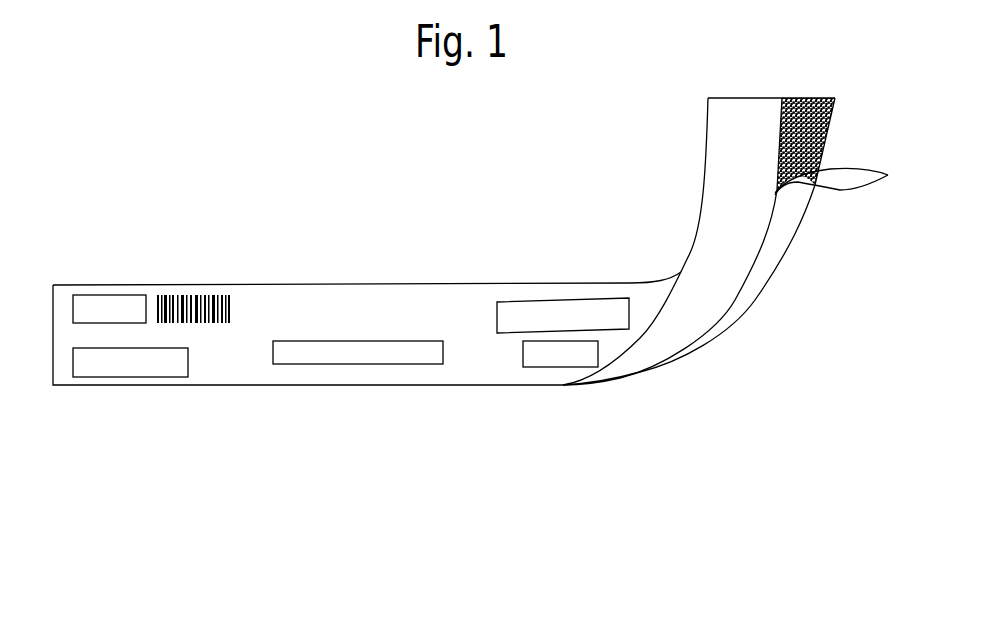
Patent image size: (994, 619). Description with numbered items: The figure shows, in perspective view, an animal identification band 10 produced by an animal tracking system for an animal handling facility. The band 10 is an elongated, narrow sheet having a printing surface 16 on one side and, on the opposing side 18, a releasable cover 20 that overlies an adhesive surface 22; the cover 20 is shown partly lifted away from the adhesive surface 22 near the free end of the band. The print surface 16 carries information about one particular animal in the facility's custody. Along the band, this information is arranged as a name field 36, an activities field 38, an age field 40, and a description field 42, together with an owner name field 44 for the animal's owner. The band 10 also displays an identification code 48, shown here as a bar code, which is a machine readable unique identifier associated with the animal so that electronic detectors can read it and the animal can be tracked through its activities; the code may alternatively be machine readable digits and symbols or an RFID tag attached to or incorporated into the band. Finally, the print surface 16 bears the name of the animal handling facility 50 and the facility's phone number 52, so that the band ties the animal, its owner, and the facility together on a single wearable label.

The animal identification band 10 is at (343, 232).
The printing surface 16 is at (348, 378).
The opposing side 18 is at (735, 138).
The releasable cover 20 is at (777, 235).
The adhesive surface 22 is at (808, 118).
The name field 36 is at (103, 296).
The activities field 38 is at (153, 362).
The age field 40 is at (547, 313).
The description field 42 is at (544, 362).
The owner name field 44 is at (275, 350).
The identification code 48 is at (177, 290).
The name of the animal handling facility 50 is at (363, 290).
The phone number 52 is at (458, 323).